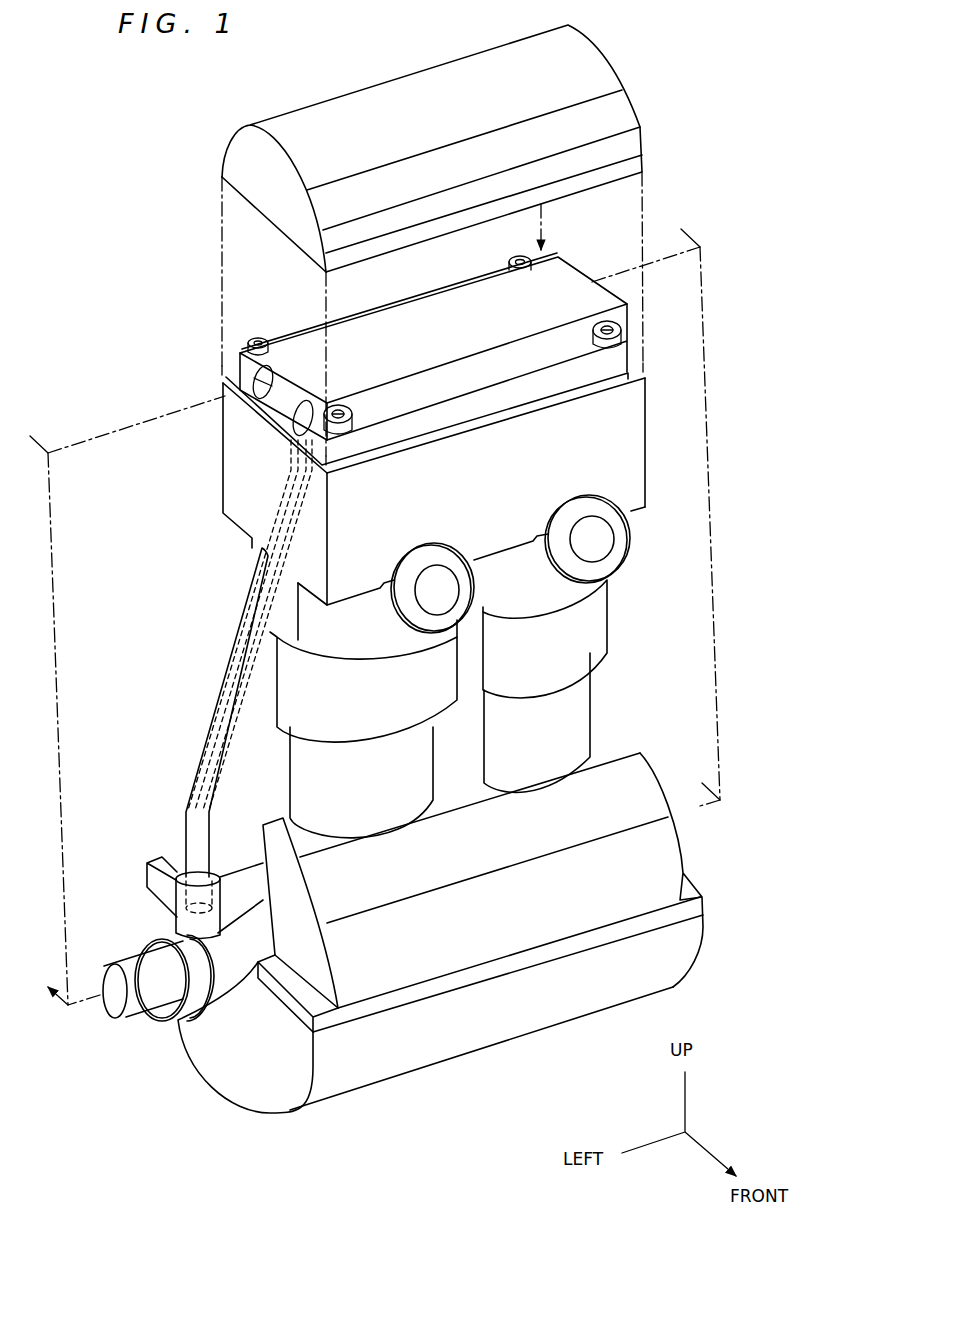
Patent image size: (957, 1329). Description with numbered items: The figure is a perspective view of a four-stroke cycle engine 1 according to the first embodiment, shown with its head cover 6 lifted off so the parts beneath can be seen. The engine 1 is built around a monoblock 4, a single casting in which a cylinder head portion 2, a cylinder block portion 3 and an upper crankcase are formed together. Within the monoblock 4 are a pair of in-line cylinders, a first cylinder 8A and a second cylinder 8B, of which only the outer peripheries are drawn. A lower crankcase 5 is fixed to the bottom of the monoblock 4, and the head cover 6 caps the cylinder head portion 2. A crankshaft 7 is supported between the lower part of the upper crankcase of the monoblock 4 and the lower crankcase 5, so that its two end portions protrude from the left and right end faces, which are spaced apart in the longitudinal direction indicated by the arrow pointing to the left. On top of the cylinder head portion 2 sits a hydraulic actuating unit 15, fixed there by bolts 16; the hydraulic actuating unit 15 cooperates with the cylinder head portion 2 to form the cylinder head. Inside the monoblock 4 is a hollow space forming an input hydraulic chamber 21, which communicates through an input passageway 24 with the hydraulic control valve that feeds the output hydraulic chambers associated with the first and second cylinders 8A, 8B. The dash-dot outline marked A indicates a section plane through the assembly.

The engine 1 is at (690, 98).
The cylinder head portion 2 is at (612, 470).
The cylinder block portion 3 is at (598, 625).
The monoblock 4 is at (748, 462).
The lower crankcase 5 is at (487, 1035).
The head cover 6 is at (393, 90).
The crankshaft 7 is at (108, 967).
The first cylinder 8A is at (398, 714).
The second cylinder 8B is at (574, 659).
The hydraulic actuating unit 15 is at (430, 318).
The bolts 16 is at (511, 262).
The input hydraulic chamber 21 is at (160, 860).
The input passageway 24 is at (215, 710).
The section plane A is at (146, 420).